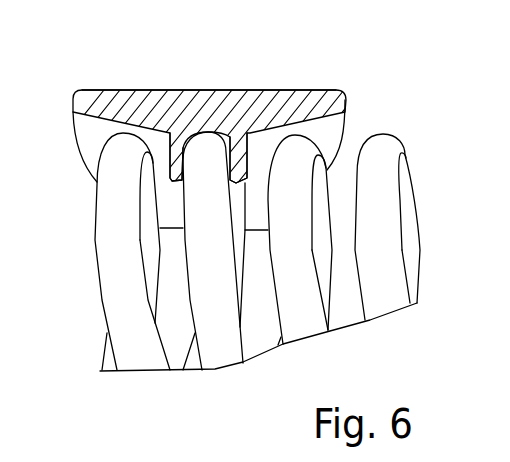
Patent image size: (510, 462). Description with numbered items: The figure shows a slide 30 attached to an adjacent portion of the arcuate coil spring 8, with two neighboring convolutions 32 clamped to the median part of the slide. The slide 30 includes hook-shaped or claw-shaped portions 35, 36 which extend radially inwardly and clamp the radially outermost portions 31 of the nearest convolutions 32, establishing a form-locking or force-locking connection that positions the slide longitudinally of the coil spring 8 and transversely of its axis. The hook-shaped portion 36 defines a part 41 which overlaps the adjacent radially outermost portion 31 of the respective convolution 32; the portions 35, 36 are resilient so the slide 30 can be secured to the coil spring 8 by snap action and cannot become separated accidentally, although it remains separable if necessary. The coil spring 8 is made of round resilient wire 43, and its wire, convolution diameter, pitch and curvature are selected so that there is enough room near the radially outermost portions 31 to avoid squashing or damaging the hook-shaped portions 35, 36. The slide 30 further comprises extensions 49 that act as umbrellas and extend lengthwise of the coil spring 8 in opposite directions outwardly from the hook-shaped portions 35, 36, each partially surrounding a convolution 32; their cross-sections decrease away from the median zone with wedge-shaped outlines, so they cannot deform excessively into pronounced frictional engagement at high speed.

The slide 30 is at (282, 108).
The radially outermost portion 31 is at (208, 84).
The hook-shaped portion 35 is at (183, 153).
The hook-shaped portion 36 is at (235, 154).
The extension 49 is at (337, 107).
The overlapping part 41 is at (228, 185).
The round resilient wire 43 is at (207, 265).
The convolution 32 is at (208, 288).
The coil spring 8 is at (380, 272).